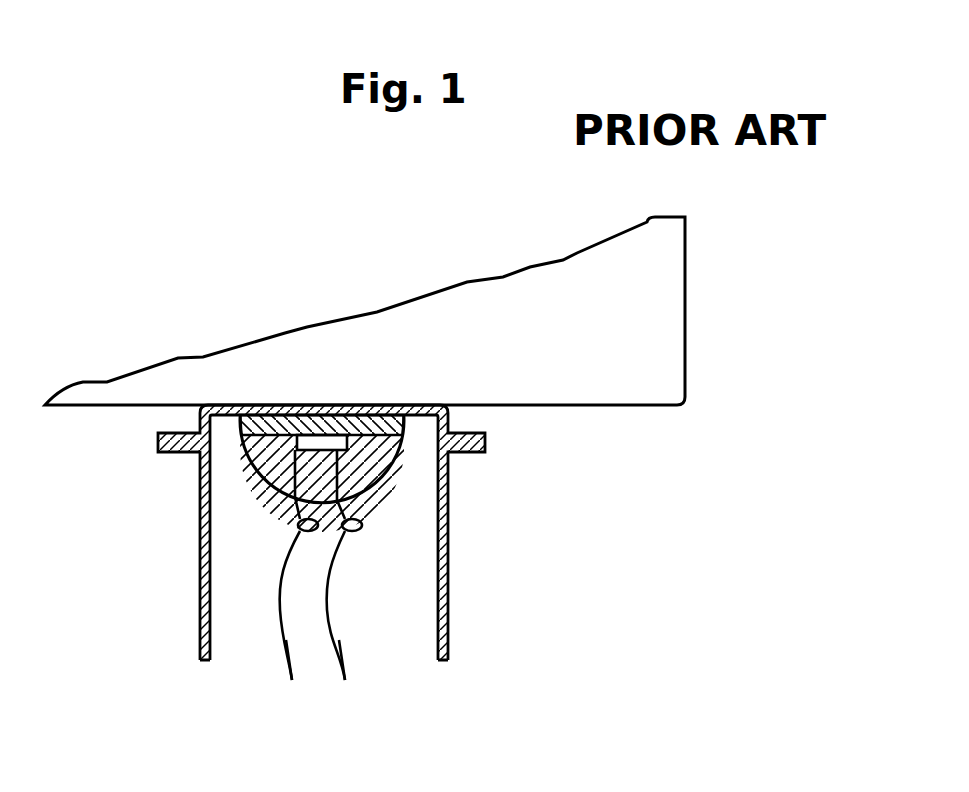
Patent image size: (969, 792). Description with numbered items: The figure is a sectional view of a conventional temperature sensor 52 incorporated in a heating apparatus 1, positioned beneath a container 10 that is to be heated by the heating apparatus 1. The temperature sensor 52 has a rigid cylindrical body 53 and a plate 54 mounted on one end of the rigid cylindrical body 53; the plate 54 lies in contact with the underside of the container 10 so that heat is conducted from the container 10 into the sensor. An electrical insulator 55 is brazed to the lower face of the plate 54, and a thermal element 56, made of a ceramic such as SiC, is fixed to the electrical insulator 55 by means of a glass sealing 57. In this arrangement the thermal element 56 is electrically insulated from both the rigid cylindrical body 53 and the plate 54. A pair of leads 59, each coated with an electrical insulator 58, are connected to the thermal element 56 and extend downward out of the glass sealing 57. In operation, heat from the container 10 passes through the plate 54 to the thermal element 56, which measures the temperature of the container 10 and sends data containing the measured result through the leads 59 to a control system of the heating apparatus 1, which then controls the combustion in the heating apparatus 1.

The heating apparatus 1 is at (667, 453).
The container 10 is at (667, 297).
The temperature sensor 52 is at (465, 418).
The rigid cylindrical body 53 is at (450, 537).
The plate 54 is at (250, 405).
The electrical insulator 55 is at (330, 407).
The thermal element 56 is at (298, 408).
The glass sealing 57 is at (371, 347).
The electrical insulator 58 is at (280, 625).
The leads 59 is at (288, 662).